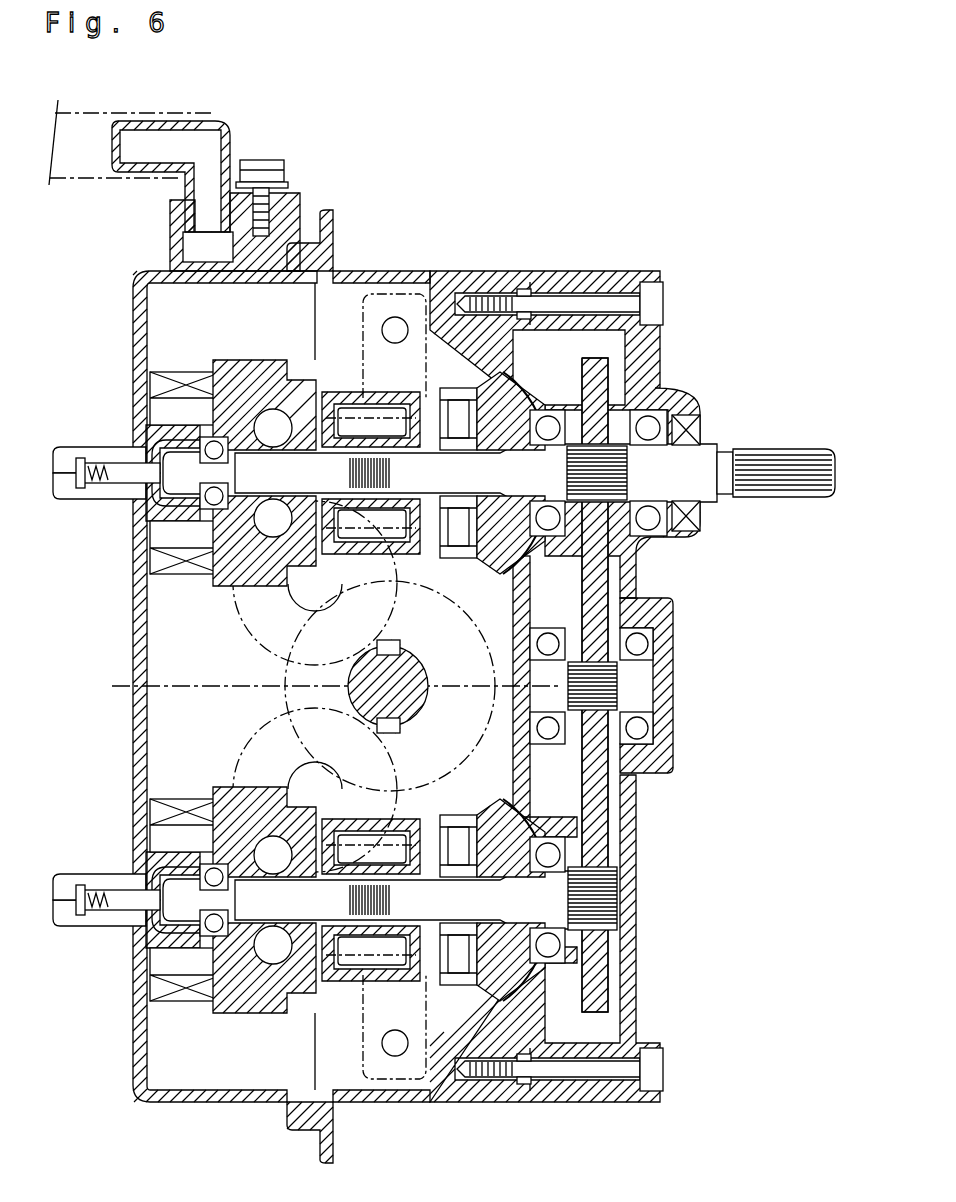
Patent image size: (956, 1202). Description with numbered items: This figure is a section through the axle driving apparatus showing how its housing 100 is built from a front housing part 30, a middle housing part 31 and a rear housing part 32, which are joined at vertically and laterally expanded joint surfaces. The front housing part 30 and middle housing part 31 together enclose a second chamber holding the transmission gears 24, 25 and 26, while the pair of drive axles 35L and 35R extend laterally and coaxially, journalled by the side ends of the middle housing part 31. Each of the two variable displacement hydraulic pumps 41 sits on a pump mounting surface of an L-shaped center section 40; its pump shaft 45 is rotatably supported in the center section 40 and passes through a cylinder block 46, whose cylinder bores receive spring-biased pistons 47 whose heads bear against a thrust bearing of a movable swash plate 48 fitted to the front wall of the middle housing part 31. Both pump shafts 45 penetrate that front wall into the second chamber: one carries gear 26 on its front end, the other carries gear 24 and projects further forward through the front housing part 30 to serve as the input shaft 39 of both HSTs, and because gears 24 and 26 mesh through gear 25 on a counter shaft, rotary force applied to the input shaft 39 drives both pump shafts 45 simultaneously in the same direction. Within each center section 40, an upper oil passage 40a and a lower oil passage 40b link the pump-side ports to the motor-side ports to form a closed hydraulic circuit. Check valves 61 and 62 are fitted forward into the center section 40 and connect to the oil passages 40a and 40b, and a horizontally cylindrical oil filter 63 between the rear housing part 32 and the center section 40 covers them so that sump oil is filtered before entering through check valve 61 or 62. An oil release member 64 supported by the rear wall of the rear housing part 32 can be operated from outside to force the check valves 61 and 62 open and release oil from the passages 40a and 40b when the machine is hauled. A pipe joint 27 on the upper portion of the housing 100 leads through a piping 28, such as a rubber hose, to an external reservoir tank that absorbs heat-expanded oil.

The housing 100 is at (441, 620).
The gear 24 is at (612, 385).
The gear 25 is at (612, 600).
The gear 26 is at (610, 845).
The pipe joint 27 is at (233, 127).
The piping 28 is at (105, 182).
The front housing part 30 is at (675, 705).
The middle housing part 31 is at (500, 272).
The rear housing part 32 is at (130, 656).
The drive axle 35R is at (348, 682).
The drive axle 35L is at (348, 692).
The input shaft 39 is at (762, 450).
The center section 40 is at (218, 372).
The upper oil passage 40a is at (276, 412).
The lower oil passage 40b is at (270, 533).
The hydraulic pump 41 is at (348, 356).
The pump shaft 45 is at (503, 572).
The cylinder block 46 is at (342, 392).
The pistons 47 is at (392, 400).
The movable swash plate 48 is at (455, 385).
The check valve 61 is at (160, 432).
The check valve 62 is at (198, 502).
The oil filter 63 is at (170, 375).
The oil release member 64 is at (85, 485).